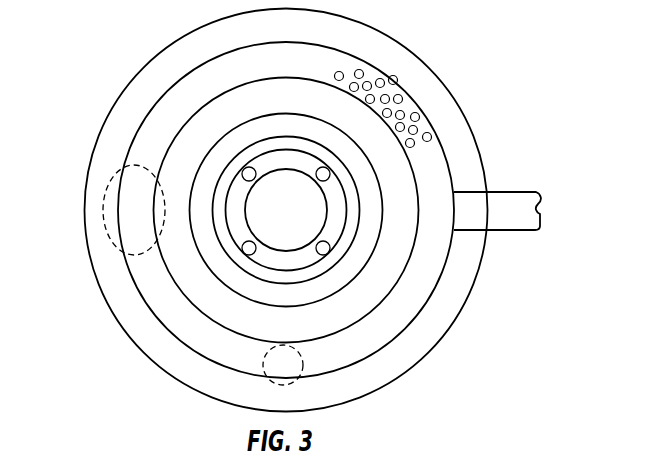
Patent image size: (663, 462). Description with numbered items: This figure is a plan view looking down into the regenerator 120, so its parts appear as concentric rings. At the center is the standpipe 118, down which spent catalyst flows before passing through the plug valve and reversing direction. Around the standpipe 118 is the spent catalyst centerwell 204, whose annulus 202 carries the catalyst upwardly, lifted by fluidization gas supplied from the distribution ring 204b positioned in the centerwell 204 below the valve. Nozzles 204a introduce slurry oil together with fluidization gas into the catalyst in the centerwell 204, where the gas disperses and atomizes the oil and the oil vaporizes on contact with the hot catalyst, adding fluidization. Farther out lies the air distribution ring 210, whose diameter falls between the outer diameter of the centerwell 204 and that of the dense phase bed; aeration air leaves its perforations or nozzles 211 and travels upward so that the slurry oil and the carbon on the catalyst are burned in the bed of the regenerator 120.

The standpipe 118 is at (307, 224).
The regenerator 120 is at (286, 206).
The annulus 202 is at (341, 214).
The spent catalyst centerwell 204 is at (378, 204).
The nozzles 204a is at (283, 253).
The distribution ring 204b is at (151, 166).
The air distribution ring 210 is at (286, 196).
The perforations or nozzles 211 is at (415, 109).